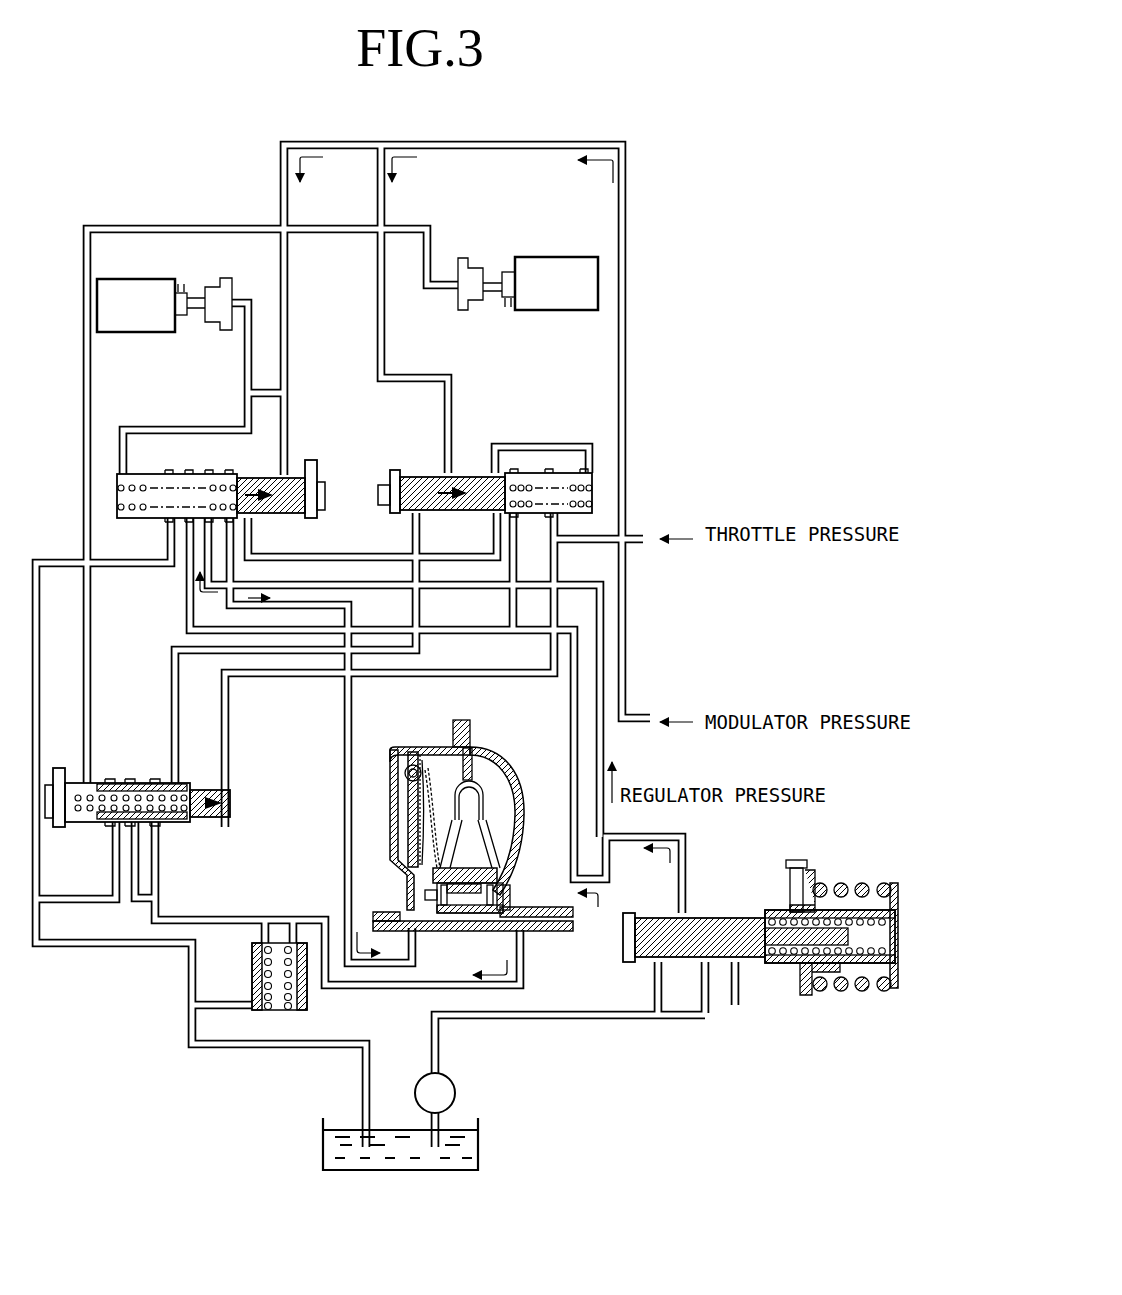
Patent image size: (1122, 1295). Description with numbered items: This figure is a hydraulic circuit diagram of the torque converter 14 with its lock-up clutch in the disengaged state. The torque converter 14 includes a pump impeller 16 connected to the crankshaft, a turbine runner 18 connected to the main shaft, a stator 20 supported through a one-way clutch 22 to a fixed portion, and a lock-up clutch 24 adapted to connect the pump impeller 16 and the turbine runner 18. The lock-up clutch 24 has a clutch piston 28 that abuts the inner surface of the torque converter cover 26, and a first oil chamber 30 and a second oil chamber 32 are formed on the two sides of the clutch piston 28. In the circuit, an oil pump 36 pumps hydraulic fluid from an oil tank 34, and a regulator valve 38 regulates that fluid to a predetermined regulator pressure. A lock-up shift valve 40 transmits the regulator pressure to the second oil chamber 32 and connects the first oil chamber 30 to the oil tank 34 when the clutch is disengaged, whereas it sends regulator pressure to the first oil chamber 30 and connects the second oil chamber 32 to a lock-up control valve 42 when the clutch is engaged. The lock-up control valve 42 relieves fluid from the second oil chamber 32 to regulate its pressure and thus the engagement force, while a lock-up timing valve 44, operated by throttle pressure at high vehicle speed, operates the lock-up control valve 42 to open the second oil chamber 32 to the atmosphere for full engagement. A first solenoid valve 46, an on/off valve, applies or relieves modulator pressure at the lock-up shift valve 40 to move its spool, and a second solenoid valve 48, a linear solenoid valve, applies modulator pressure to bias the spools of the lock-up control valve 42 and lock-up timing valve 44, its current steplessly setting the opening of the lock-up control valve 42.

The torque converter 14 is at (435, 827).
The pump impeller 16 is at (505, 800).
The turbine runner 18 is at (455, 765).
The stator 20 is at (470, 848).
The one-way clutch 22 is at (463, 895).
The lock-up clutch 24 is at (405, 748).
The torque converter cover 26 is at (393, 840).
The clutch piston 28 is at (405, 790).
The first oil chamber 30 is at (405, 855).
The second oil chamber 32 is at (400, 815).
The oil tank 34 is at (478, 1145).
The oil pump 36 is at (455, 1093).
The regulator valve 38 is at (835, 868).
The lock-up shift valve 40 is at (178, 458).
The lock-up control valve 42 is at (473, 455).
The lock-up timing valve 44 is at (113, 766).
The first solenoid valve 46 is at (130, 279).
The second solenoid valve 48 is at (532, 257).